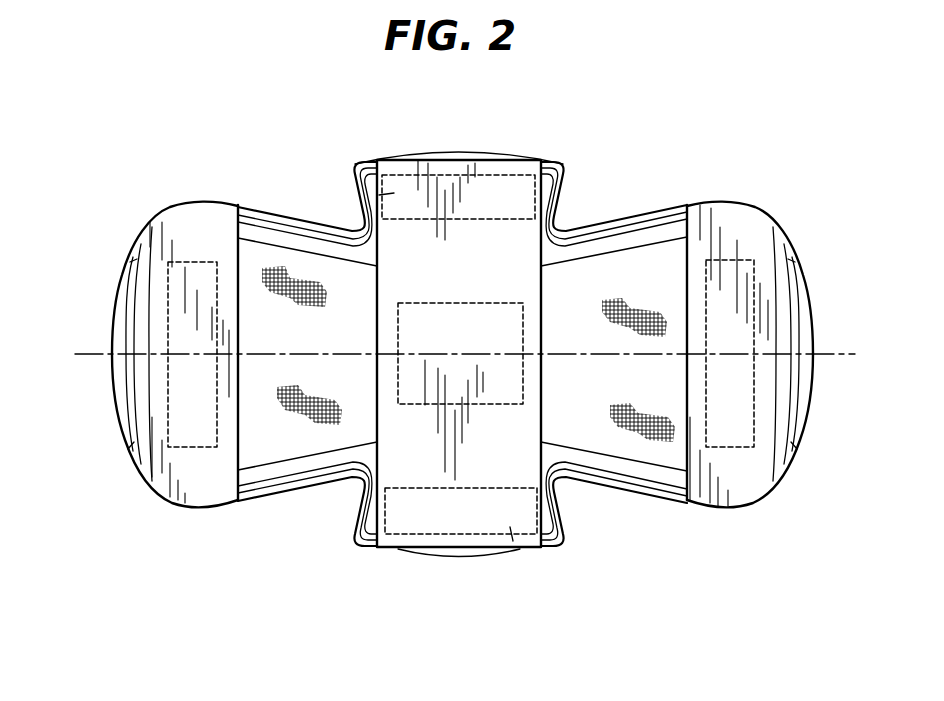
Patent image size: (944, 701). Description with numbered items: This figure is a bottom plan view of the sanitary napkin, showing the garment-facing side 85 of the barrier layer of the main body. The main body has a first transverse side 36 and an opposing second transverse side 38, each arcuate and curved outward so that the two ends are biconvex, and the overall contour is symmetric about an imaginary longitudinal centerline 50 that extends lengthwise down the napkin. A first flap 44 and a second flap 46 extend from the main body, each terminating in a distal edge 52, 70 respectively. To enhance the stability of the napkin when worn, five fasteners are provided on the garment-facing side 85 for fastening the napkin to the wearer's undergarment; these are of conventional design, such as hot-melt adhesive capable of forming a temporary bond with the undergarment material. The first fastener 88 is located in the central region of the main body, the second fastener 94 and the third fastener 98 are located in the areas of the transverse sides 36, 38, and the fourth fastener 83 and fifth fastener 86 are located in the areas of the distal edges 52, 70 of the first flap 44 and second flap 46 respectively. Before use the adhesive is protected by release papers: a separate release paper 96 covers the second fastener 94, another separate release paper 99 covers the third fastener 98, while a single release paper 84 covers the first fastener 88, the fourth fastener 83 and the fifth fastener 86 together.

The first transverse side 36 is at (815, 418).
The second transverse side 38 is at (113, 412).
The first flap 44 is at (374, 144).
The second flap 46 is at (384, 570).
The longitudinal centerline 50 is at (460, 355).
The distal edge of the first flap 52 is at (462, 145).
The distal edge of the second flap 70 is at (461, 570).
The fourth fastener 83 is at (373, 191).
The release paper 84 is at (522, 269).
The garment-facing side 85 is at (612, 396).
The fifth fastener 86 is at (521, 556).
The first fastener 88 is at (583, 278).
The second fastener 94 is at (736, 290).
The release paper 96 is at (729, 222).
The third fastener 98 is at (183, 310).
The release paper 99 is at (181, 217).